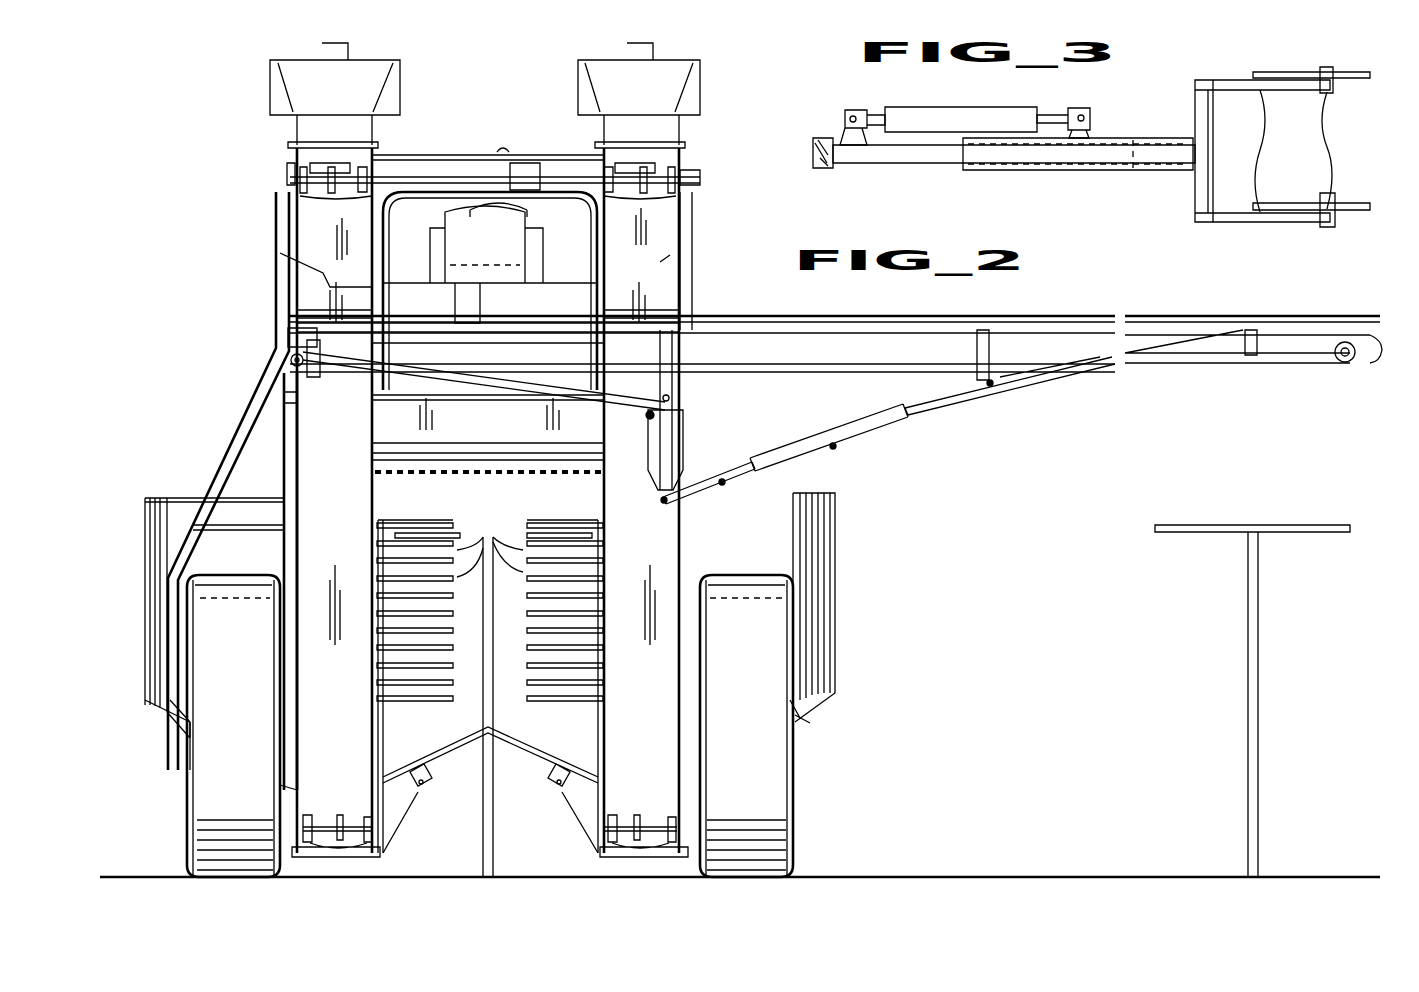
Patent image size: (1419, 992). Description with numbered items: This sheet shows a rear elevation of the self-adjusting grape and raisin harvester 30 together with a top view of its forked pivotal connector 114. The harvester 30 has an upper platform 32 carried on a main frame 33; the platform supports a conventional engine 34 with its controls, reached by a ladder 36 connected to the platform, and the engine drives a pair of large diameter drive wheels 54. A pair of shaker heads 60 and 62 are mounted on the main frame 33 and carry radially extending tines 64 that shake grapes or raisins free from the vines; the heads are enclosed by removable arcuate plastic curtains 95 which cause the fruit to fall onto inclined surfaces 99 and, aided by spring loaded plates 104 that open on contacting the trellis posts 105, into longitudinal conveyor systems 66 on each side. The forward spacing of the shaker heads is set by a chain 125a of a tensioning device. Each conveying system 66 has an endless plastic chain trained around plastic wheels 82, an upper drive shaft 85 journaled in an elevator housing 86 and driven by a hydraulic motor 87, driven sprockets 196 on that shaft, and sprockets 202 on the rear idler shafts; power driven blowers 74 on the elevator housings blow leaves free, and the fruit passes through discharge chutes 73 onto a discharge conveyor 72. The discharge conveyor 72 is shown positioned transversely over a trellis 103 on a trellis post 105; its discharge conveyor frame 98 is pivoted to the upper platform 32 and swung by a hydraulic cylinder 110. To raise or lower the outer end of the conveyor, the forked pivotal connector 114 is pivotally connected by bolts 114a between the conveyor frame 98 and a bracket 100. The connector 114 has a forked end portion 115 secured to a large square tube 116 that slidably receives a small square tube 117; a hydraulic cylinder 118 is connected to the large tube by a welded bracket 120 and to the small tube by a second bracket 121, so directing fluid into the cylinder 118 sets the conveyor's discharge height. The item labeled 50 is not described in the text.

In FIG. 2, the self-adjusting force balance radial grape and raisin harvester 30 is at (229, 108).
In FIG. 2, the upper platform 32 is at (562, 362).
In FIG. 2, the main frame 33 is at (274, 428).
In FIG. 2, the engine 34 is at (430, 271).
In FIG. 2, the ladder 36 is at (225, 468).
In FIG. 2, the cab top 50 is at (470, 205).
In FIG. 2, the drive wheels 54 is at (200, 793).
In FIG. 2, the shaker head 60 is at (375, 513).
In FIG. 2, the shaker head 62 is at (574, 701).
In FIG. 2, the tines 64 is at (517, 528).
In FIG. 2, the longitudinal conveyor systems 66 is at (285, 262).
In FIG. 2, the discharge conveyor 72 is at (1274, 365).
In FIG. 2, the discharge chutes 73 is at (297, 288).
In FIG. 2, the power driven blowers 74 is at (582, 65).
In FIG. 2, the plastic wheels 82 is at (290, 165).
In FIG. 2, the upper chain supporting shaft 85 is at (438, 142).
In FIG. 2, the elevator housing 86 is at (297, 555).
In FIG. 2, the hydraulic motor 87 is at (688, 173).
In FIG. 2, the arcuate plastic curtains 95 is at (145, 500).
In FIG. 2, the discharge conveyor frame 98 is at (1100, 375).
In FIG. 3, the discharge conveyor frame 98 is at (1350, 72).
In FIG. 2, the inclined surfaces 99 is at (188, 737).
In FIG. 2, the bracket 100 is at (680, 440).
In FIG. 2, the trellis 103 is at (415, 500).
In FIG. 2, the spring loaded plates 104 is at (498, 735).
In FIG. 2, the trellis post 105 is at (525, 800).
In FIG. 2, the hydraulic cylinder 110 is at (655, 422).
In FIG. 2, the forked pivotal connector 114 is at (908, 452).
In FIG. 3, the forked pivotal connector 114 is at (1243, 67).
In FIG. 2, the bolts / horizontal pivot pin 114a is at (662, 500).
In FIG. 3, the bolts / horizontal pivot pin 114a is at (1349, 150).
In FIG. 2, the forked end portion 115 is at (940, 413).
In FIG. 3, the forked end portion 115 is at (1258, 151).
In FIG. 2, the large square tube 116 is at (843, 435).
In FIG. 3, the large square tube 116 is at (1153, 165).
In FIG. 2, the small square tube 117 is at (730, 475).
In FIG. 3, the small square tube 117 is at (920, 165).
In FIG. 3, the hydraulic cylinder 118 is at (937, 115).
In FIG. 3, the bracket 120 is at (1093, 128).
In FIG. 3, the second bracket 121 is at (833, 133).
In FIG. 2, the chain 125a is at (395, 473).
In FIG. 2, the driven sprockets 196 is at (325, 190).
In FIG. 2, the sprockets 202 is at (340, 858).